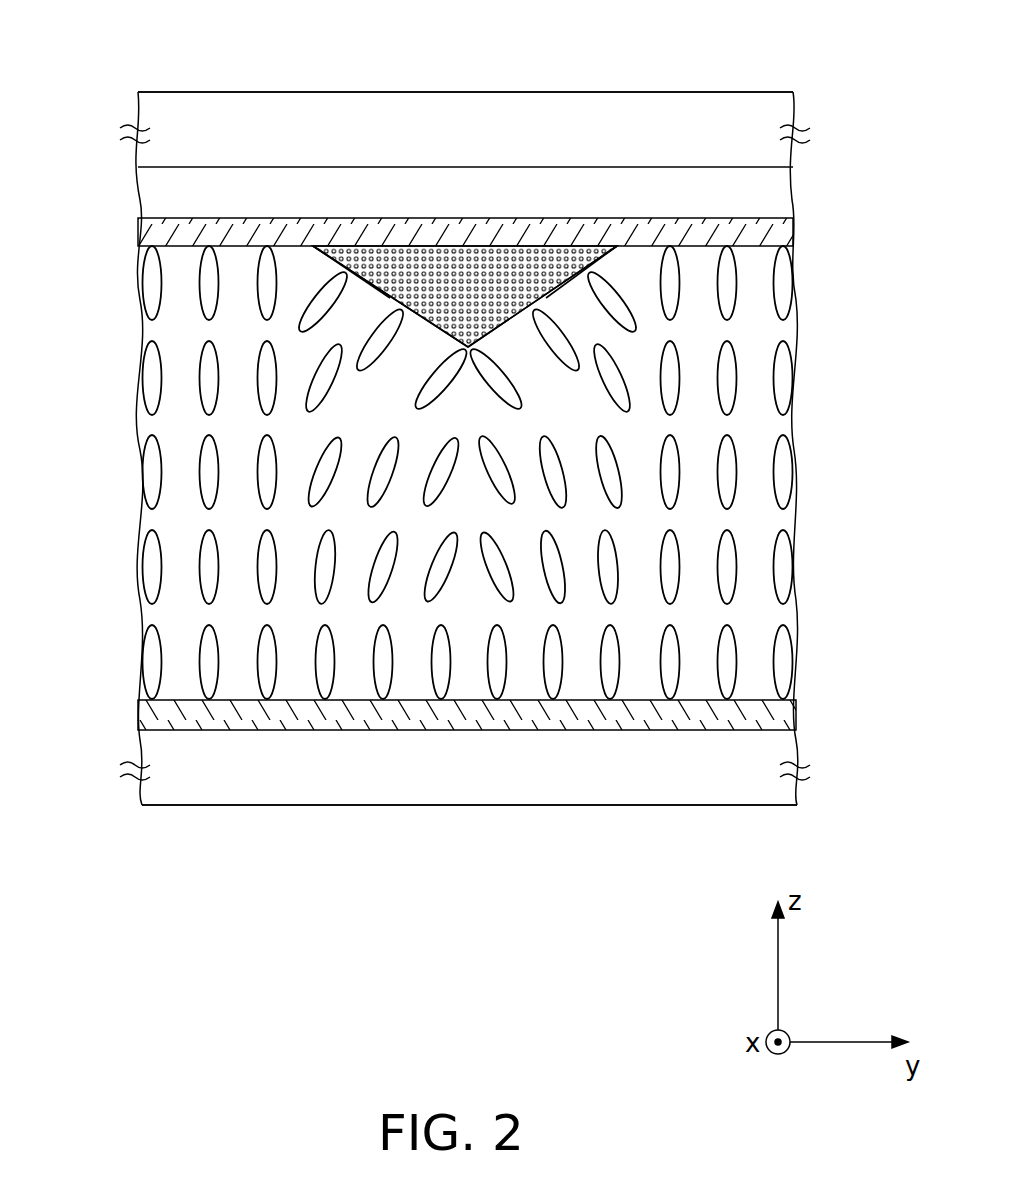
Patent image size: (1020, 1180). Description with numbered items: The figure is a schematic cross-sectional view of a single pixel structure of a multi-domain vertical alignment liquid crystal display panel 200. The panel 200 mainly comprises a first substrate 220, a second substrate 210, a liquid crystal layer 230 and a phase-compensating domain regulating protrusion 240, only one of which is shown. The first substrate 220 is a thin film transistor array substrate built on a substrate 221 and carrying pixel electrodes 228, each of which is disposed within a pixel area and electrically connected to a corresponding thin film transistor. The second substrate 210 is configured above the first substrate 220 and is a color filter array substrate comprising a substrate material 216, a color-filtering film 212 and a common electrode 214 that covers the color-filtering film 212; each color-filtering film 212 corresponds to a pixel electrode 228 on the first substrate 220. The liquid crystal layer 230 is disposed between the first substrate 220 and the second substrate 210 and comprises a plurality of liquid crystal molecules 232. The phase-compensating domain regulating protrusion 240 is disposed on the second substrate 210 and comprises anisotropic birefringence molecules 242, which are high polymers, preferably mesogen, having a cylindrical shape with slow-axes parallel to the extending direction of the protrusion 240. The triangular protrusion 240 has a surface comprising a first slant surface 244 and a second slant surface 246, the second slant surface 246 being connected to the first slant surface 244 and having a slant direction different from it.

The multi-domain vertical alignment liquid crystal display panel 200 is at (880, 862).
The second substrate 210 is at (112, 92).
The color-filtering film 212 is at (773, 187).
The common electrode 214 is at (773, 232).
The substrate material 216 is at (773, 108).
The first substrate 220 is at (112, 700).
The substrate 221 is at (778, 794).
The pixel electrode 228 is at (768, 722).
The liquid crystal layer 230 is at (140, 430).
The liquid crystal molecules 232 is at (782, 382).
The phase-compensating domain regulating protrusion 240 is at (511, 271).
The anisotropic birefringence molecules 242 is at (422, 262).
The first slant surface 244 is at (392, 298).
The second slant surface 246 is at (544, 298).